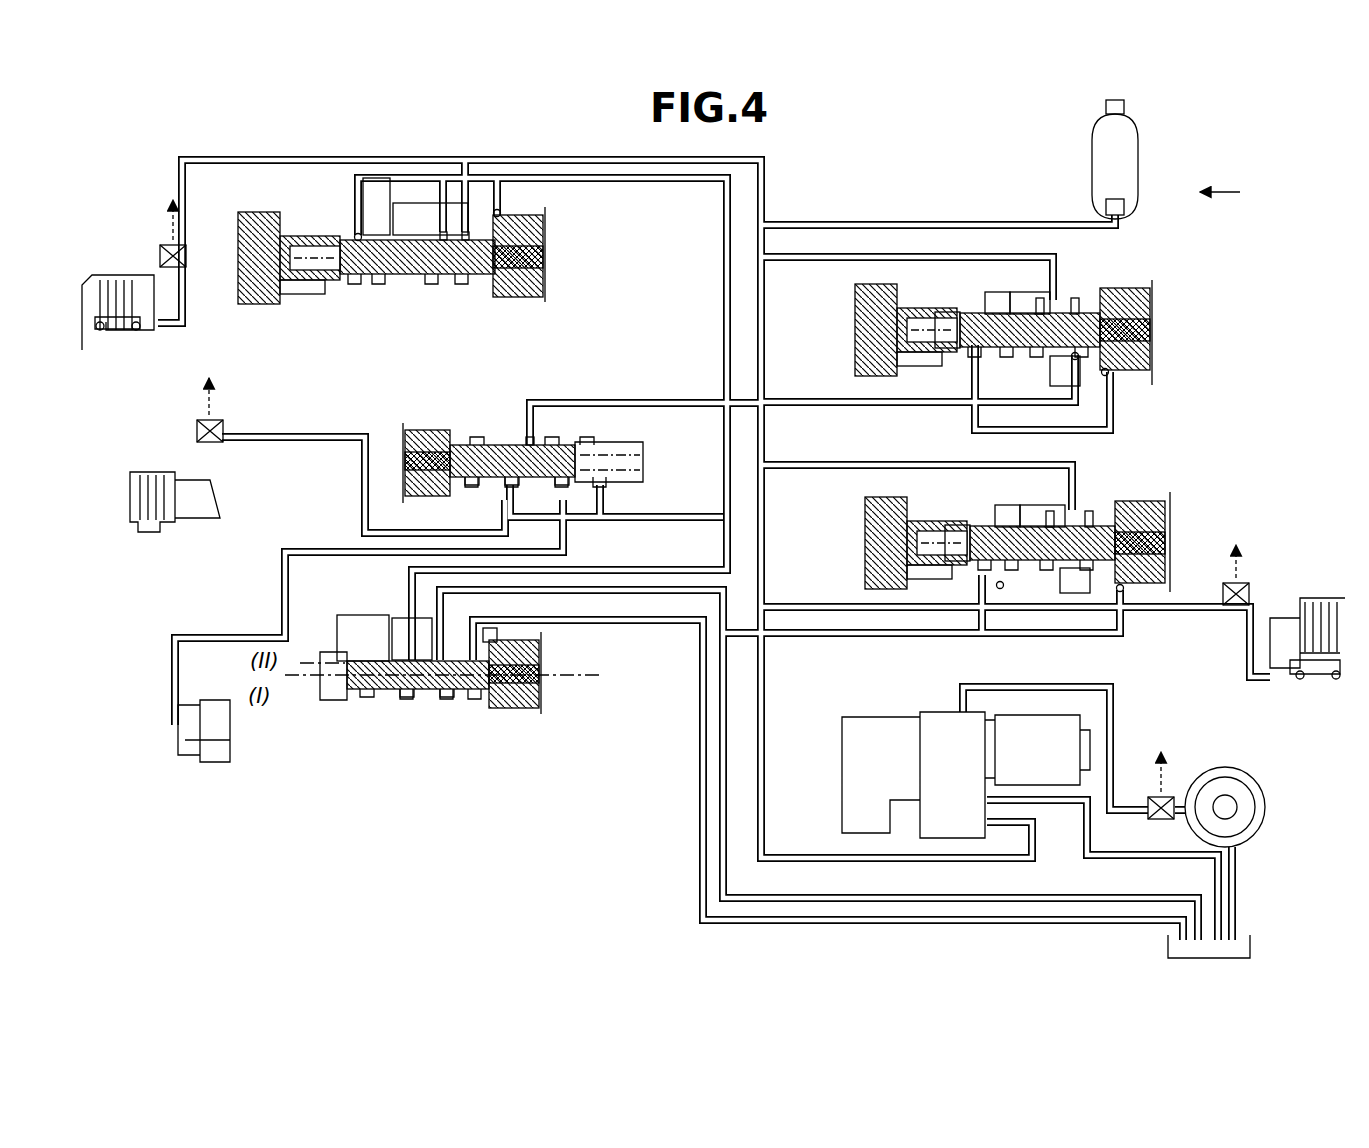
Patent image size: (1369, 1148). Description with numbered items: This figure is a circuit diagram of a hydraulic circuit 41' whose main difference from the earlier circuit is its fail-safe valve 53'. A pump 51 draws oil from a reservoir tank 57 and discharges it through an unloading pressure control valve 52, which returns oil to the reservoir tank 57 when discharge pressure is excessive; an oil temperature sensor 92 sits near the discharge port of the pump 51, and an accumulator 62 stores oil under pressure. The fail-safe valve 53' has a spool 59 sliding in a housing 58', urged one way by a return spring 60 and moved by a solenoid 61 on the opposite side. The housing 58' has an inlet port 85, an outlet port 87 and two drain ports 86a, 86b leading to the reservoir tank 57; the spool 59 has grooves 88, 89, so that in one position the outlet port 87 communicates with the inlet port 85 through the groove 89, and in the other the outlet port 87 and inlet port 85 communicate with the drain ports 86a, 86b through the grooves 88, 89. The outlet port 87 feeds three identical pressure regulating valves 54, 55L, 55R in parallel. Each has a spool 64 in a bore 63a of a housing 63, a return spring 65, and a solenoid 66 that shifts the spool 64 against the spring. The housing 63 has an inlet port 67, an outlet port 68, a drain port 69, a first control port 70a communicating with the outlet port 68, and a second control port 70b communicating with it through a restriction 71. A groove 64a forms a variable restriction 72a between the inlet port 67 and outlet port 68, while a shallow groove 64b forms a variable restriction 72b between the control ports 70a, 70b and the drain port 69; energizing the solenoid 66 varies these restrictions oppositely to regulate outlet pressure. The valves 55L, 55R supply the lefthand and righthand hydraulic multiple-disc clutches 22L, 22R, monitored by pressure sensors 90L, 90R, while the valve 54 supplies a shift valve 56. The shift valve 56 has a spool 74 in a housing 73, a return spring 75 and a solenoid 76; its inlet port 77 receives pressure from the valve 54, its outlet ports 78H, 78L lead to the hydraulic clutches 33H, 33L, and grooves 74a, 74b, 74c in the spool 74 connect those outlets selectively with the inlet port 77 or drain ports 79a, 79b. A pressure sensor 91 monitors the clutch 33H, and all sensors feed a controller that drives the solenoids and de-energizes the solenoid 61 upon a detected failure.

The hydraulic circuit 41' is at (1238, 193).
The righthand hydraulic multiple-disc clutch 22R is at (120, 345).
The lefthand hydraulic multiple-disc clutch 22L is at (1313, 612).
The hydraulic clutch 33H is at (148, 532).
The hydraulic clutch 33L is at (195, 772).
The pump 51 is at (1238, 800).
The unloading pressure control valve 52 is at (892, 728).
The fail-safe valve 53' is at (468, 663).
The pressure regulating valve 54 is at (1162, 298).
The pressure regulating valve 55R is at (506, 310).
The pressure regulating valve 55L is at (1175, 500).
The shift valve 56 is at (608, 400).
The reservoir tank 57 is at (1250, 958).
The housing 58' is at (385, 716).
The spool 59 is at (370, 690).
The return spring 60 is at (328, 654).
The solenoid 61 is at (543, 706).
The accumulator 62 is at (1132, 158).
The housing 63 is at (308, 216).
The bore 63a is at (432, 284).
The spool 64 is at (352, 285).
The groove 64a is at (468, 284).
The shallow groove 64b is at (380, 284).
The return spring 65 is at (276, 298).
The solenoid 66 is at (542, 240).
The inlet port 67 is at (465, 160).
The outlet port 68 is at (497, 213).
The drain port 69 is at (358, 236).
The first control port 70a is at (372, 182).
The second control port 70b is at (427, 204).
The restriction 71 is at (442, 178).
The variable restriction 72a is at (1060, 386).
The variable restriction 72b is at (958, 302).
The housing 73 is at (441, 416).
The spool 74 is at (495, 450).
The groove 74a is at (550, 438).
The groove 74b is at (470, 437).
The groove 74c is at (590, 440).
The return spring 75 is at (643, 458).
The solenoid 76 is at (403, 435).
The inlet port 77 is at (530, 437).
The outlet port 78H is at (512, 484).
The outlet port 78L is at (565, 495).
The drain port 79a is at (465, 490).
The drain port 79b is at (600, 487).
The inlet port 85 is at (448, 700).
The drain port 86a is at (380, 660).
The drain port 86b is at (524, 652).
The outlet port 87 is at (405, 658).
The groove 88 is at (407, 700).
The groove 89 is at (475, 700).
The pressure sensor 90R is at (160, 246).
The pressure sensor 90L is at (1243, 582).
The pressure sensor 91 is at (223, 428).
The oil temperature sensor 92 is at (1162, 793).